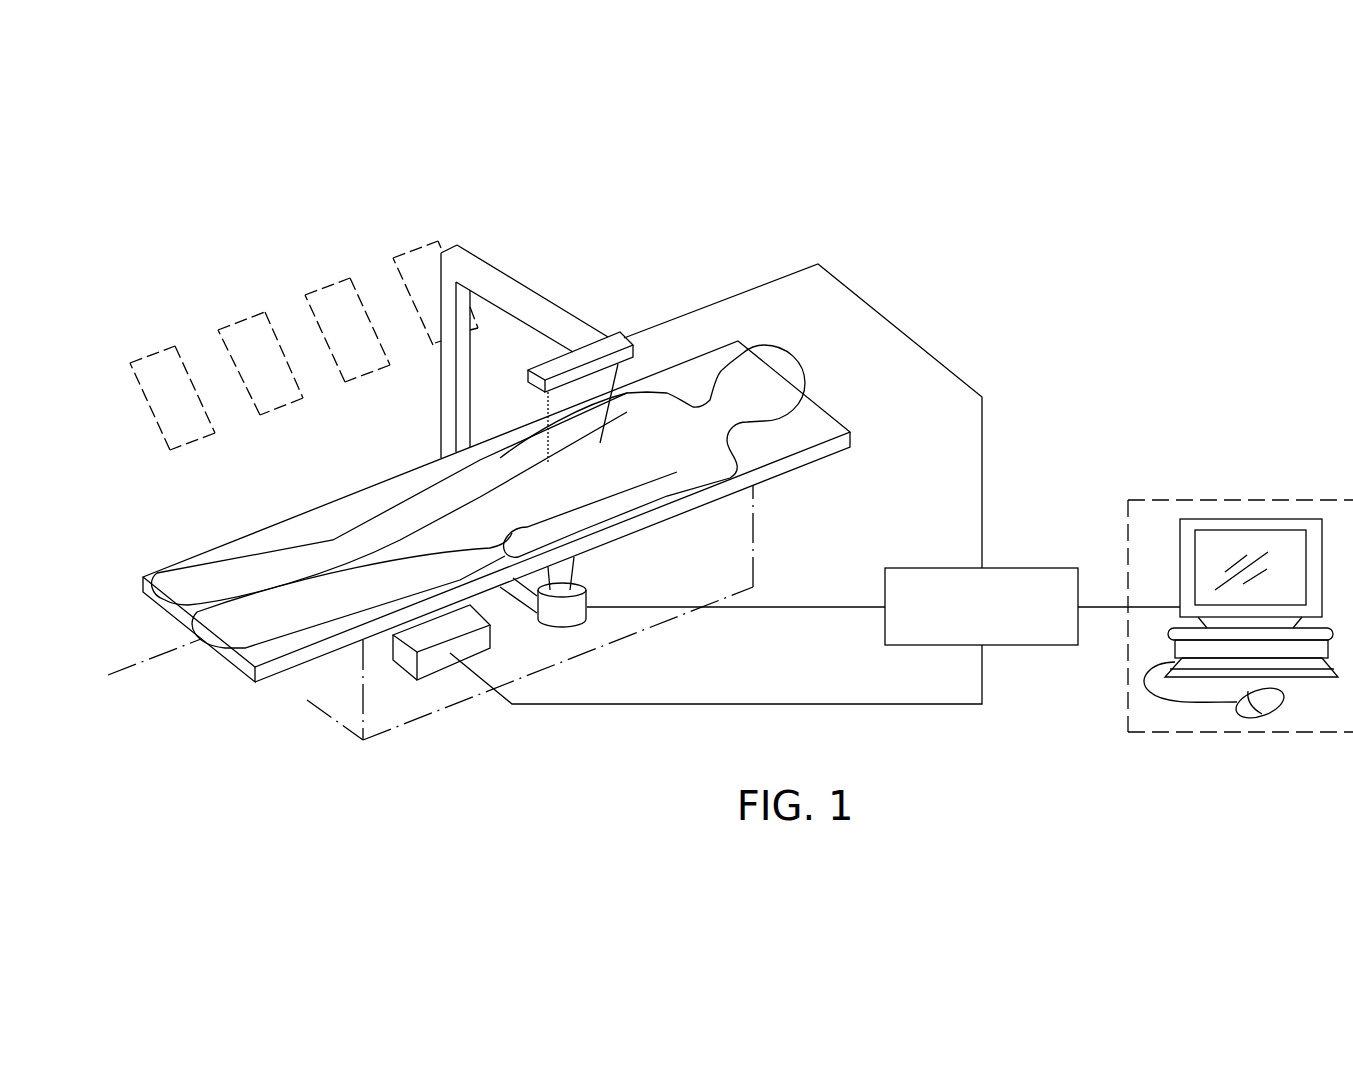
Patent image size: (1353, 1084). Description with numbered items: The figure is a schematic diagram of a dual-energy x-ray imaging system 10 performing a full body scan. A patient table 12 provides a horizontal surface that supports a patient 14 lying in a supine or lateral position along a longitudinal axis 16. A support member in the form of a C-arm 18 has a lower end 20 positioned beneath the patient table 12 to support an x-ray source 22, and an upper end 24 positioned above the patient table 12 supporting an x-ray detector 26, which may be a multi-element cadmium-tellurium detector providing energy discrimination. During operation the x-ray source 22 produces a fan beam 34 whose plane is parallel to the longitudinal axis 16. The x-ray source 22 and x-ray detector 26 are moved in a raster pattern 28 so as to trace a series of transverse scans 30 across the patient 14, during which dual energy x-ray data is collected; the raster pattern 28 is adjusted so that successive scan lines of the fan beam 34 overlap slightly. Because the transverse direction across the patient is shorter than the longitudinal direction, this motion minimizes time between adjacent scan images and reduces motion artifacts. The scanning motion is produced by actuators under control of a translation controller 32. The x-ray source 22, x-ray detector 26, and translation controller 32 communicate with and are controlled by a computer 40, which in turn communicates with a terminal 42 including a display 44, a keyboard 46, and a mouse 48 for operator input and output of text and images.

The system 10 is at (921, 236).
The patient table 12 is at (277, 673).
The patient 14 is at (262, 567).
The longitudinal axis 16 is at (137, 674).
The C-arm 18 is at (472, 266).
The lower end 20 is at (517, 605).
The x-ray source 22 is at (573, 618).
The upper end 24 is at (515, 287).
The x-ray detector 26 is at (598, 337).
The raster pattern 28 is at (238, 322).
The transverse scans 30 is at (222, 384).
The translation controller 32 is at (440, 675).
The fan beam 34 is at (600, 382).
The computer 40 is at (1050, 568).
The terminal 42 is at (1225, 500).
The display 44 is at (1283, 530).
The keyboard 46 is at (1205, 660).
The mouse 48 is at (1287, 712).